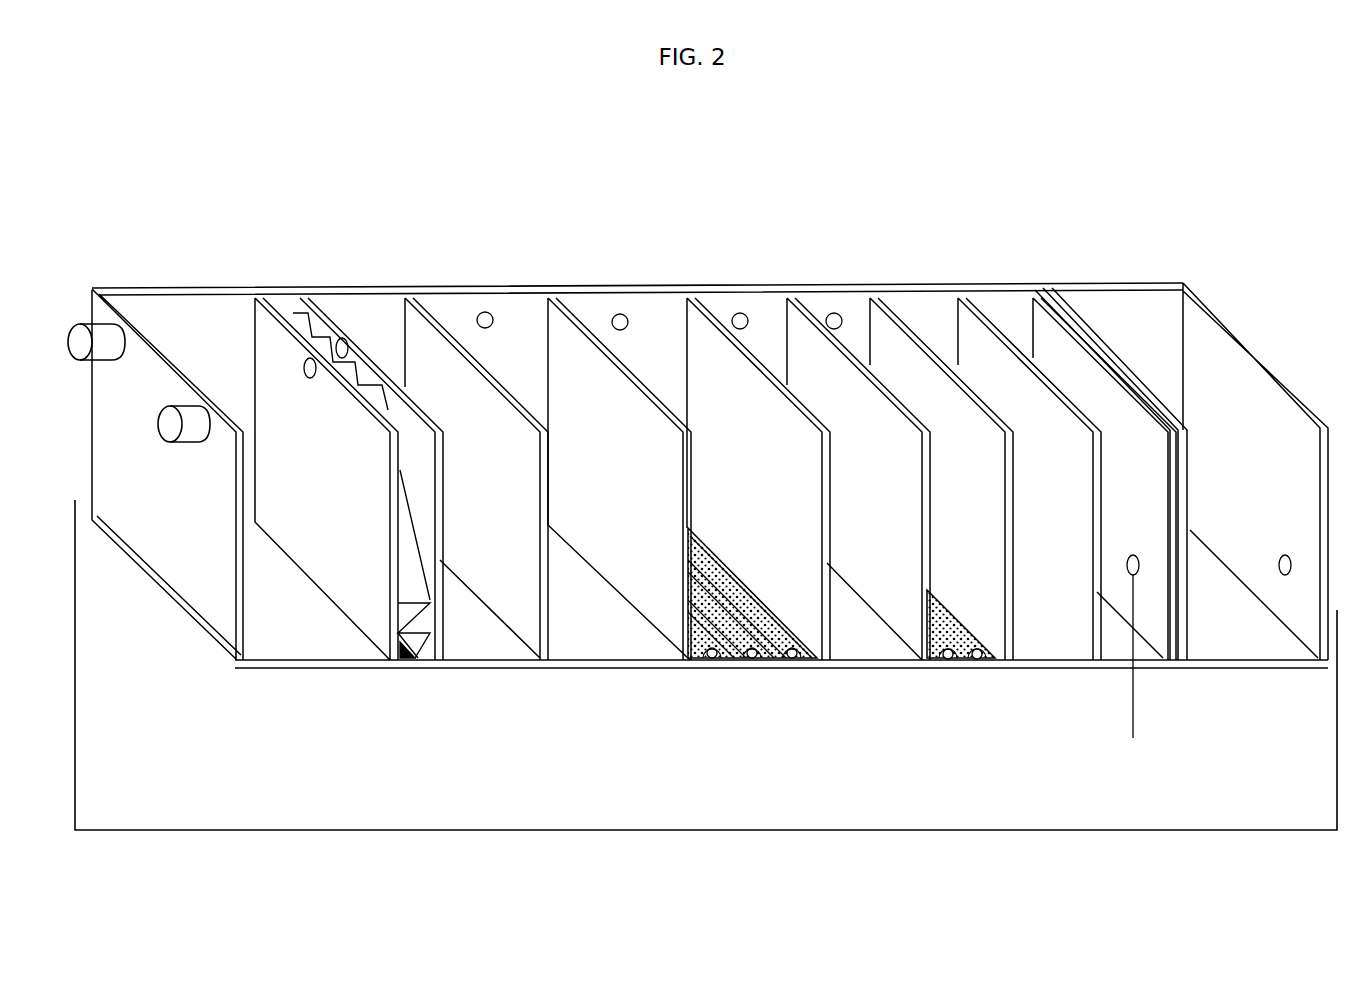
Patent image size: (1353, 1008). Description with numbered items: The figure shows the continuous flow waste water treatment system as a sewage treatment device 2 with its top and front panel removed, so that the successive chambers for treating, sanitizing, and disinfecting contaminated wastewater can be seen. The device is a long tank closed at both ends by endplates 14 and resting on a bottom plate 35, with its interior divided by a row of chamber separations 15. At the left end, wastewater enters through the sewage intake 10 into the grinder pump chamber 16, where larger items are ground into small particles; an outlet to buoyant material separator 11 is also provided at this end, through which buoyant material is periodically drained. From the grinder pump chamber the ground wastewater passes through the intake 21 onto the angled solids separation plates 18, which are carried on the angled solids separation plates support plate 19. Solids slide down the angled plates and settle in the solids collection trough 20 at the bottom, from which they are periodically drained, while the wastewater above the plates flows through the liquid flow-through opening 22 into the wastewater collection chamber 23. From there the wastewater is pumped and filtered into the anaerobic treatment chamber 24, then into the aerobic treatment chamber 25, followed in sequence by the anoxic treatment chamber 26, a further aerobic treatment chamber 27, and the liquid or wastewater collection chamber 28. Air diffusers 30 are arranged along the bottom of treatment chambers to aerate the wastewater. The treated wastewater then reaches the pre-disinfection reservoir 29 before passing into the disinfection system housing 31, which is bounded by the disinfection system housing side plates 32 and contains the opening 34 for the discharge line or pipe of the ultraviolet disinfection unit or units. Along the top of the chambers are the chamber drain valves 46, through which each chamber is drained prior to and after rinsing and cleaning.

The sewage treatment device 2 is at (715, 830).
The sewage intake 10 is at (172, 442).
The outlet to buoyant material separator 11 is at (83, 324).
The endplates 14 is at (1168, 760).
The chamber separations 15 is at (1092, 728).
The grinder pump chamber 16 is at (196, 305).
The angled solids separation plates 18 is at (294, 313).
The angled solids separation plates support plate 19 is at (437, 668).
The solids collection trough 20 is at (413, 655).
The intake from grinder pump into angled separation plates 21 is at (311, 378).
The liquid flow-through opening 22 is at (343, 338).
The wastewater collection chamber 23 is at (487, 652).
The anaerobic treatment chamber 24 is at (608, 650).
The aerobic treatment chamber 25 is at (665, 305).
The anoxic treatment chamber 26 is at (865, 652).
The aerobic treatment chamber 27 is at (857, 305).
The liquid or wastewater collection chamber 28 is at (1047, 652).
The pre-disinfection reservoir 29 is at (1000, 305).
The air diffusers 30 is at (963, 805).
The disinfection system housing 31 is at (1117, 305).
The disinfection system housing side plates 32 is at (1185, 725).
The opening for ultraviolet disinfection unit discharge line 34 is at (1285, 575).
The bottom plate 35 is at (1237, 745).
The chamber drain valves 46 is at (832, 313).